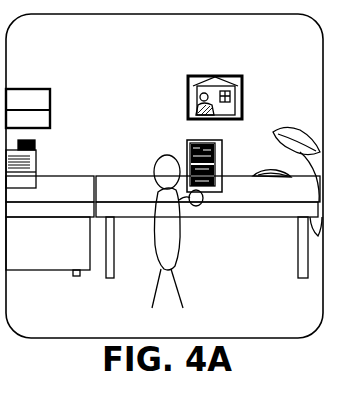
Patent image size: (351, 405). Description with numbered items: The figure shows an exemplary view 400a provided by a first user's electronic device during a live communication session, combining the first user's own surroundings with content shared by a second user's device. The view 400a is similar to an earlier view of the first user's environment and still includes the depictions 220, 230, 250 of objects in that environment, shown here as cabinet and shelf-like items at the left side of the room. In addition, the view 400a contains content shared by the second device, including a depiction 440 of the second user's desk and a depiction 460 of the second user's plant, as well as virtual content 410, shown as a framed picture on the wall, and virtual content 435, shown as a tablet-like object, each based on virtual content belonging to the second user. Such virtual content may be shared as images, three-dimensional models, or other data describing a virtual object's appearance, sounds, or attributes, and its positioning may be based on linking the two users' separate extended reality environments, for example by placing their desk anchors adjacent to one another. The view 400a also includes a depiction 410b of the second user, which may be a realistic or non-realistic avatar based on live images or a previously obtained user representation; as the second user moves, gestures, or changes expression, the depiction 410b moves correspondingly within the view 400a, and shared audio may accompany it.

The view 400a is at (78, 42).
The depiction 250 is at (50, 92).
The depiction 230 is at (36, 165).
The depiction 220 is at (62, 256).
The depiction of the desk 440 is at (153, 174).
The depiction of the user 410b is at (179, 286).
The virtual content 435 is at (222, 140).
The virtual content 410 is at (201, 75).
The depiction of the plant 460 is at (297, 130).